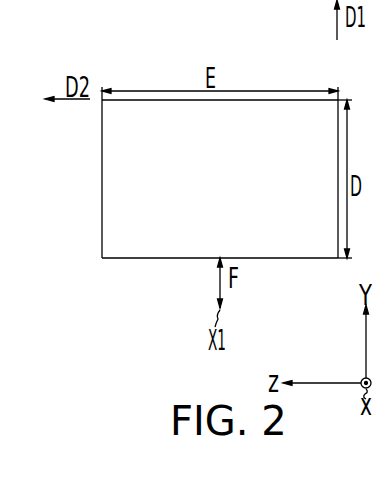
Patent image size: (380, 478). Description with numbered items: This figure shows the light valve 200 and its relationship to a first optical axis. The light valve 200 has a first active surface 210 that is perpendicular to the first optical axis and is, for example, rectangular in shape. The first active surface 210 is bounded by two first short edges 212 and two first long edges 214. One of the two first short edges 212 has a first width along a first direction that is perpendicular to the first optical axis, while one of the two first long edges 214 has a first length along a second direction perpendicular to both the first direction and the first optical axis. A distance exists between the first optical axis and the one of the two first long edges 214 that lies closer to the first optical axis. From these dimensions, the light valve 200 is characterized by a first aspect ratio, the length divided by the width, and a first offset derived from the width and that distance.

The light valve 200 is at (188, 212).
The first active surface 210 is at (188, 212).
The first short edges 212 is at (101, 213).
The first long edges 214 is at (133, 103).